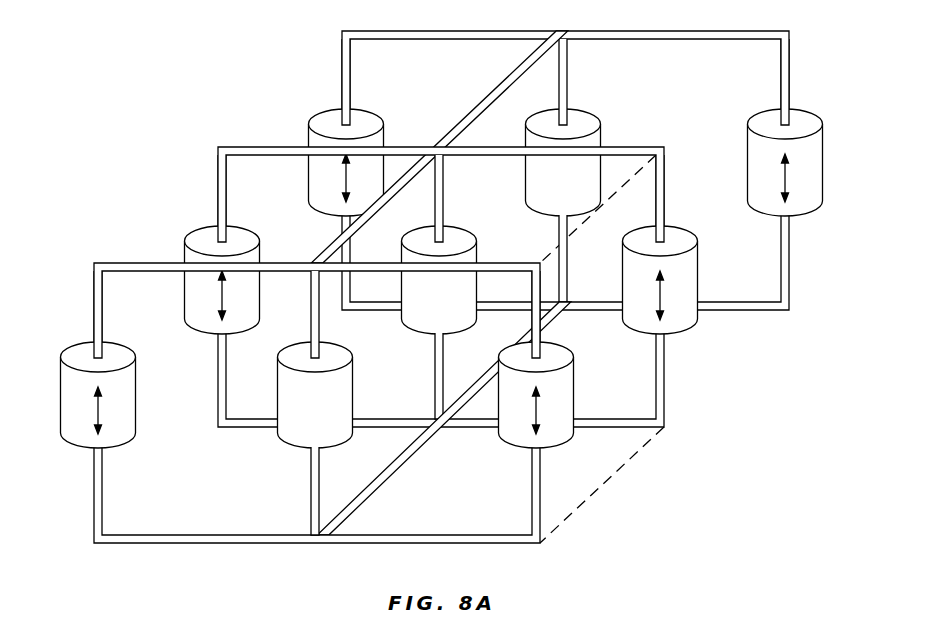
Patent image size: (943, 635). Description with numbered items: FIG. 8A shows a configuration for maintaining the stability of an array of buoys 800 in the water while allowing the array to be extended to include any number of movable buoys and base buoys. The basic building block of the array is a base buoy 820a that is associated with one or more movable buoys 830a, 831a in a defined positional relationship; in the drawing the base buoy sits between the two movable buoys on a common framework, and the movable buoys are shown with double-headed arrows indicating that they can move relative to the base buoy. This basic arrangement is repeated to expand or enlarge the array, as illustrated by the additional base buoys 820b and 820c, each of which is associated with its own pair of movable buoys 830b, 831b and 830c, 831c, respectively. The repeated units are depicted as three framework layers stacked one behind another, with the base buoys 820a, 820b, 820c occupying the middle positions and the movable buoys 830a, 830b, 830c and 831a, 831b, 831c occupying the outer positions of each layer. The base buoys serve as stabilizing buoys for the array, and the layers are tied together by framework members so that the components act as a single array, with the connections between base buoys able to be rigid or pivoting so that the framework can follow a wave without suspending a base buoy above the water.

The array of buoys 800 is at (442, 287).
The movable buoy 830a is at (113, 438).
The movable buoy 830b is at (195, 233).
The movable buoy 830c is at (323, 118).
The base buoy 820a is at (293, 432).
The base buoy 820b is at (418, 317).
The base buoy 820c is at (585, 120).
The movable buoy 831a is at (518, 440).
The movable buoy 831b is at (680, 320).
The movable buoy 831c is at (762, 120).